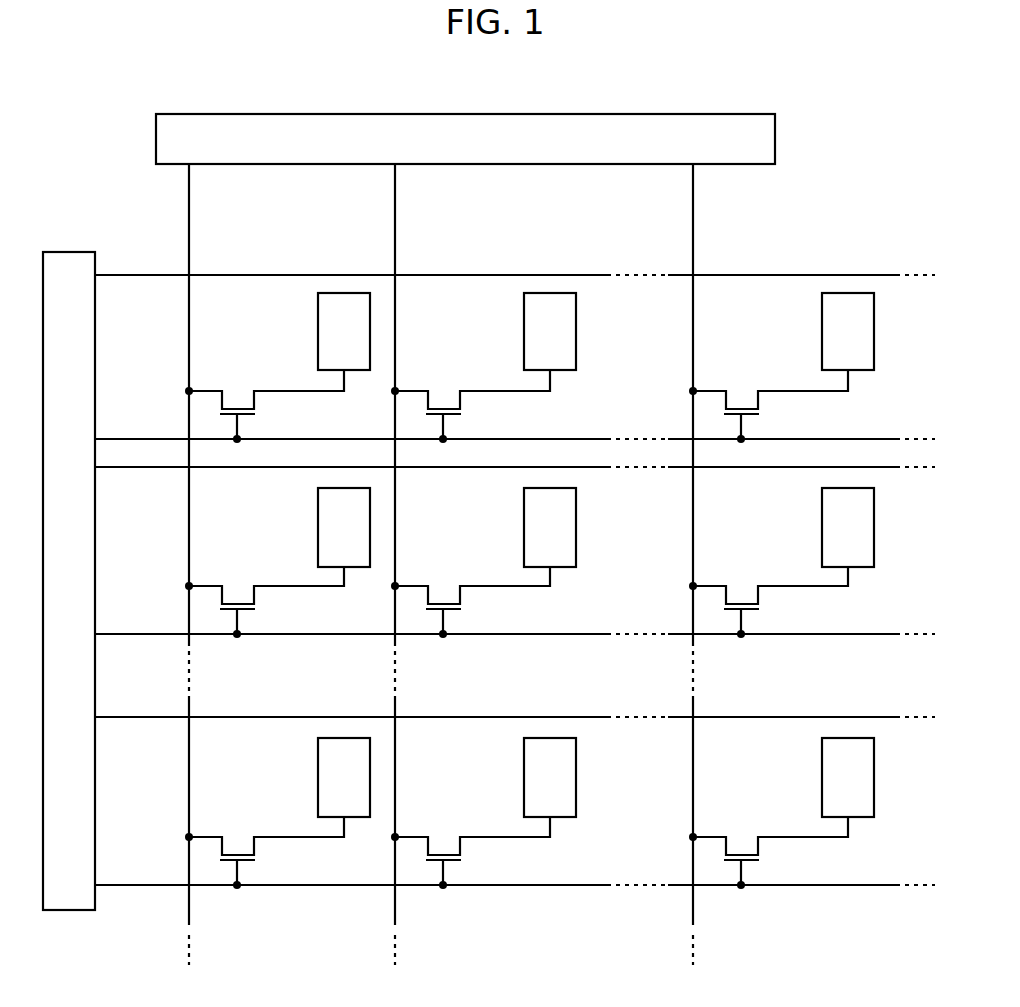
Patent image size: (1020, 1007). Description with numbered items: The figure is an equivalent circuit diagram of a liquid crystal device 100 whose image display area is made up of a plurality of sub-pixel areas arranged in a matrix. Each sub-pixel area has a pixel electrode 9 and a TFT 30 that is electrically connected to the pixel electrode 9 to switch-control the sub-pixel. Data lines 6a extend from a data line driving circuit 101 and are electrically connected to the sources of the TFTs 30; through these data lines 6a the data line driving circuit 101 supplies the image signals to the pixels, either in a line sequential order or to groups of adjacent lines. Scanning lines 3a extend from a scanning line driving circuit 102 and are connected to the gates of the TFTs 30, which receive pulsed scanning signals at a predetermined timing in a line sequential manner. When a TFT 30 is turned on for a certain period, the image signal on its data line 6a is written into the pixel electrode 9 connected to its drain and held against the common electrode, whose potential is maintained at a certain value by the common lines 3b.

The liquid crystal device 100 is at (884, 240).
The data line driving circuit 101 is at (156, 140).
The scanning line driving circuit 102 is at (62, 252).
The scanning line 3a is at (158, 438).
The common line 3b is at (149, 275).
The data line 6a is at (189, 243).
The pixel electrode 9 is at (343, 300).
The TFT 30 is at (262, 417).